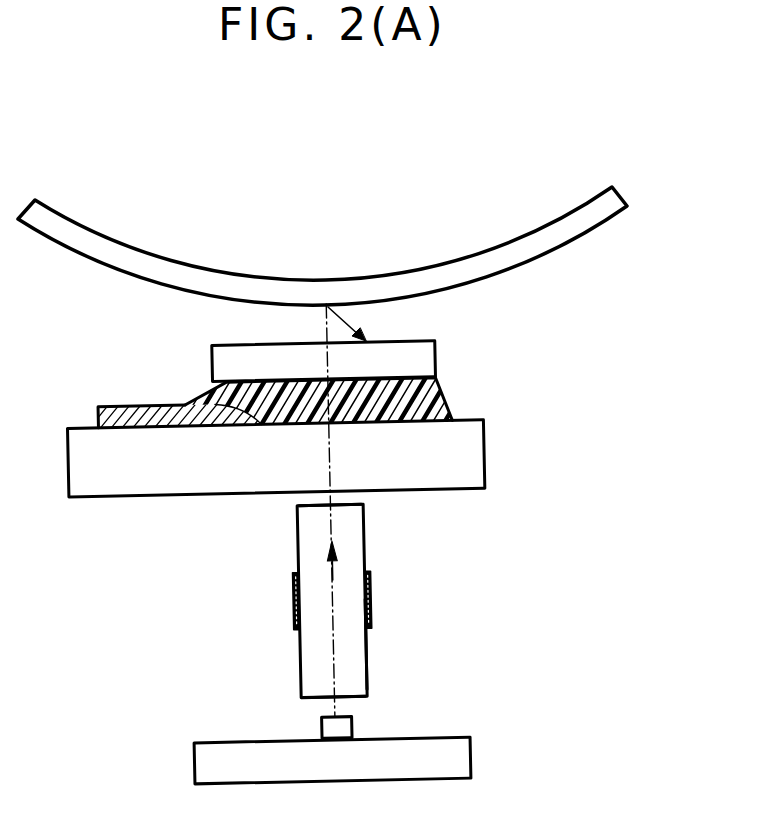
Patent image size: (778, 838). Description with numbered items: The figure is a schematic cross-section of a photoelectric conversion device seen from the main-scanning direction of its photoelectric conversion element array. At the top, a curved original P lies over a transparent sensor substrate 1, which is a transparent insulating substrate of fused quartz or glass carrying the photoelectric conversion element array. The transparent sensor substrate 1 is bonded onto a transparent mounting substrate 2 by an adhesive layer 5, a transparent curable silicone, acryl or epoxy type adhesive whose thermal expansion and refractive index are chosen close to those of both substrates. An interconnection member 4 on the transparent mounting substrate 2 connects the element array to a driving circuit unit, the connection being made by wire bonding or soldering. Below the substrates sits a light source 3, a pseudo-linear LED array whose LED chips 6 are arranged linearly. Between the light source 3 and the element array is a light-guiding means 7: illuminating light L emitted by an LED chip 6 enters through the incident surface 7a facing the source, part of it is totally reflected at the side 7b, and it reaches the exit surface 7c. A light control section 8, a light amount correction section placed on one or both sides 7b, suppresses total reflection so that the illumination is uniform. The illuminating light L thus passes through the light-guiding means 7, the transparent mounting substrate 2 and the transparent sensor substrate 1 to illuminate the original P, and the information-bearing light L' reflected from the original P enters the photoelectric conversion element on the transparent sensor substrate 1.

The original P is at (508, 240).
The transparent sensor substrate 1 is at (422, 360).
The transparent mounting substrate 2 is at (472, 463).
The light source 3 is at (428, 752).
The interconnection member 4 is at (125, 415).
The adhesive layer 5 is at (428, 403).
The LED chip 6 is at (330, 733).
The light-guiding means 7 is at (352, 555).
The incident surface 7a is at (358, 698).
The side 7b is at (368, 642).
The exit surface 7c is at (314, 504).
The light control section 8 is at (296, 590).
The illuminating light L is at (337, 510).
The information-bearing light L' is at (358, 324).